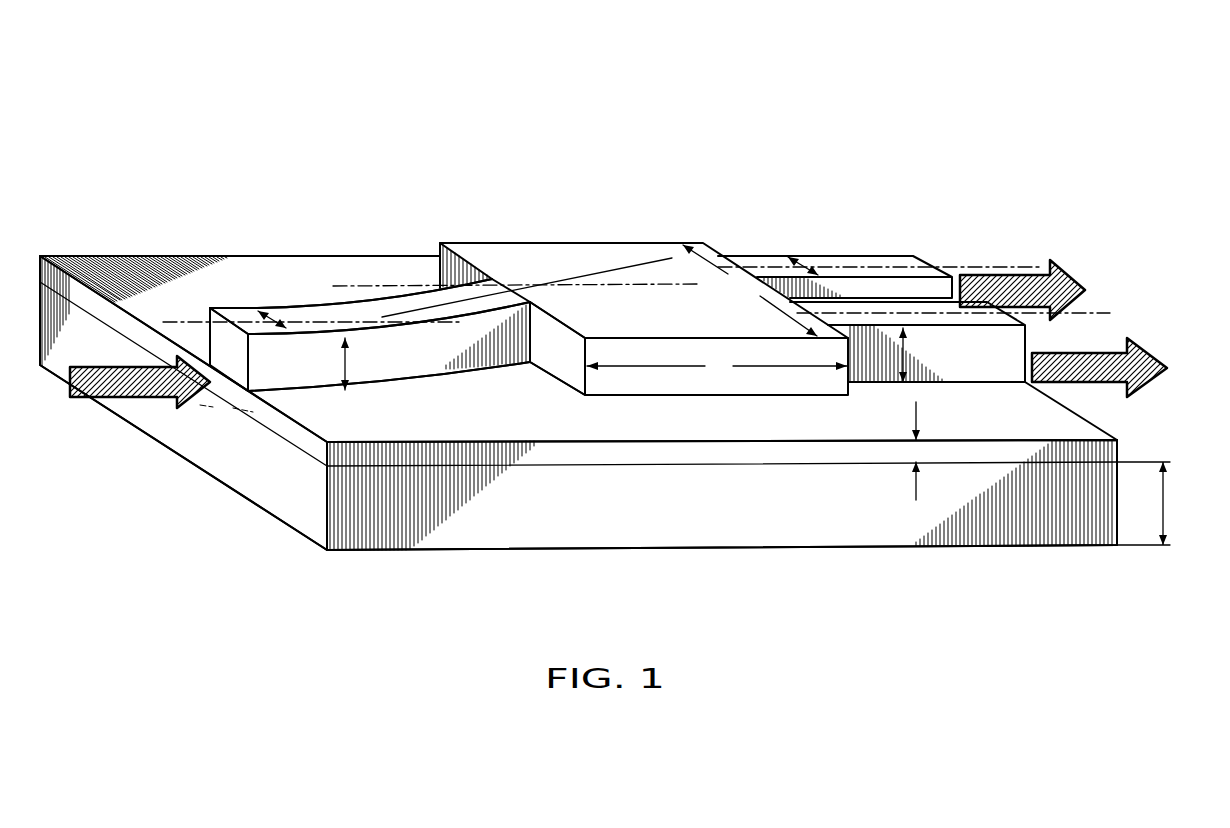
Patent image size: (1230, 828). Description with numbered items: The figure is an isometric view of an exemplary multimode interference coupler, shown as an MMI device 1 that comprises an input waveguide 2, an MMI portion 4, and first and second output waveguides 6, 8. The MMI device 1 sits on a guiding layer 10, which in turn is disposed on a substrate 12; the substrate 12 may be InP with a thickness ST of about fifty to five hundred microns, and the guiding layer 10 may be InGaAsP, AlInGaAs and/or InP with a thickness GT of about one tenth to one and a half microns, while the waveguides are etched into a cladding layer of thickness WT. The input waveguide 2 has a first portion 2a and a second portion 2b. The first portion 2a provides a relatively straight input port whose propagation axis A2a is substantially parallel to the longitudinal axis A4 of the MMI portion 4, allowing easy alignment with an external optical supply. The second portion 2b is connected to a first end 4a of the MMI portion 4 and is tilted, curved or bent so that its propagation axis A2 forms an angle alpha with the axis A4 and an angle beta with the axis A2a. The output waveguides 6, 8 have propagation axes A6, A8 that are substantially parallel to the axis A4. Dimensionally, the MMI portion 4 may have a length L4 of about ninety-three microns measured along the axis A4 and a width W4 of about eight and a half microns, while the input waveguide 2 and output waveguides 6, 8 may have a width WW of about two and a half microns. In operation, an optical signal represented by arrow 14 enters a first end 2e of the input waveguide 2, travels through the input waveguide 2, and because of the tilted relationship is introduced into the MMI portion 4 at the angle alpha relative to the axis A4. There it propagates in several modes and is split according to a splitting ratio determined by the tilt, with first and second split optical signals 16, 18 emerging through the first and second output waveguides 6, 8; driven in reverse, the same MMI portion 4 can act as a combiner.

The MMI device 1 is at (425, 145).
The input waveguide 2 is at (335, 295).
The first portion 2a is at (303, 373).
The second portion 2b is at (440, 270).
The first end 2e is at (220, 346).
The MMI portion 4 is at (562, 243).
The first end 4a is at (558, 358).
The first output waveguide 6 is at (903, 300).
The second output waveguide 8 is at (850, 253).
The guiding layer 10 is at (690, 450).
The substrate 12 is at (350, 550).
The arrow 14 is at (92, 378).
The first split optical signal 16 is at (1143, 347).
The second split optical signal 18 is at (1073, 275).
The propagation axis A2 is at (637, 283).
The propagation axis A2a is at (292, 320).
The propagation axis A4 is at (657, 283).
The propagation axis A6 is at (1097, 313).
The propagation axis A8 is at (1027, 262).
The thickness WT is at (350, 362).
The width WW is at (272, 322).
The width W4 is at (750, 290).
The length L4 is at (717, 371).
The thickness GT is at (917, 452).
The thickness ST is at (1154, 503).